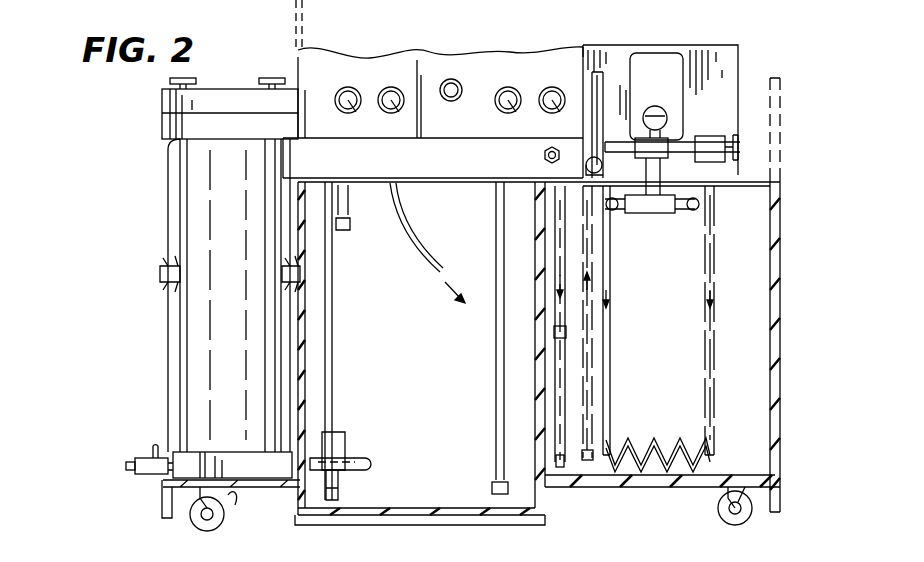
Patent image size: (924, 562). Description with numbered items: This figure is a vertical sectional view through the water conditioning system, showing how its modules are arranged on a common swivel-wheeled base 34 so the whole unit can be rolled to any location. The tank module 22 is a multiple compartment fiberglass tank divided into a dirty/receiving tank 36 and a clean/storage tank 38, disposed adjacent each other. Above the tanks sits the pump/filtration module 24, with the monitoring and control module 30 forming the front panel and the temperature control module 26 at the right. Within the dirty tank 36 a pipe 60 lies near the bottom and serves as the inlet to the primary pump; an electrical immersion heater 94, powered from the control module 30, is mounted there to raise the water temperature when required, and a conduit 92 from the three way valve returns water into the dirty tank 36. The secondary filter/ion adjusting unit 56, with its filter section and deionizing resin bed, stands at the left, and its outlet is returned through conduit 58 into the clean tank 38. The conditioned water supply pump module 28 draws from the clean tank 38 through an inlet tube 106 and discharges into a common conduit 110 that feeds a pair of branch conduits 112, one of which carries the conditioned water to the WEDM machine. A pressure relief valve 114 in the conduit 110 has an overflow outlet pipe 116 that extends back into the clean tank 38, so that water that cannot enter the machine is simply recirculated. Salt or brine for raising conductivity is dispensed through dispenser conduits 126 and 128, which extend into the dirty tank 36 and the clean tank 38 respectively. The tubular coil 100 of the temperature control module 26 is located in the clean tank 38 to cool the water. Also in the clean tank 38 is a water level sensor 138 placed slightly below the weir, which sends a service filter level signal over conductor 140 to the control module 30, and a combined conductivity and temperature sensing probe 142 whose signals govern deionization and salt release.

The tank module 22 is at (776, 316).
The pump/filtration module 24 is at (233, 96).
The temperature control module 26 is at (740, 66).
The conditioned water supply pump module 28 is at (602, 66).
The monitoring and control module 30 is at (462, 133).
The swivel-wheeled base 34 is at (228, 500).
The dirty/receiving compartment or tank 36 is at (416, 363).
The clean/storage compartment or tank 38 is at (662, 347).
The secondary filter/ion adjusting unit 56 is at (242, 303).
The conduit 58 is at (610, 310).
The pipe 60 is at (346, 492).
The conduit 92 is at (333, 328).
The electrical immersion heater 94 is at (372, 458).
The tubular coil 100 is at (640, 432).
The inlet tube 106 is at (590, 465).
The common conduit 110 is at (622, 147).
The supply or branch conduits 112 is at (693, 212).
The pressure relief valve 114 is at (710, 138).
The overflow outlet pipe 116 is at (716, 288).
The dispenser conduit 126 is at (432, 256).
The dispenser conduit 128 is at (560, 262).
The water level sensor 138 is at (556, 333).
The conductor 140 is at (562, 268).
The conductivity and temperature sensing probe 142 is at (560, 465).